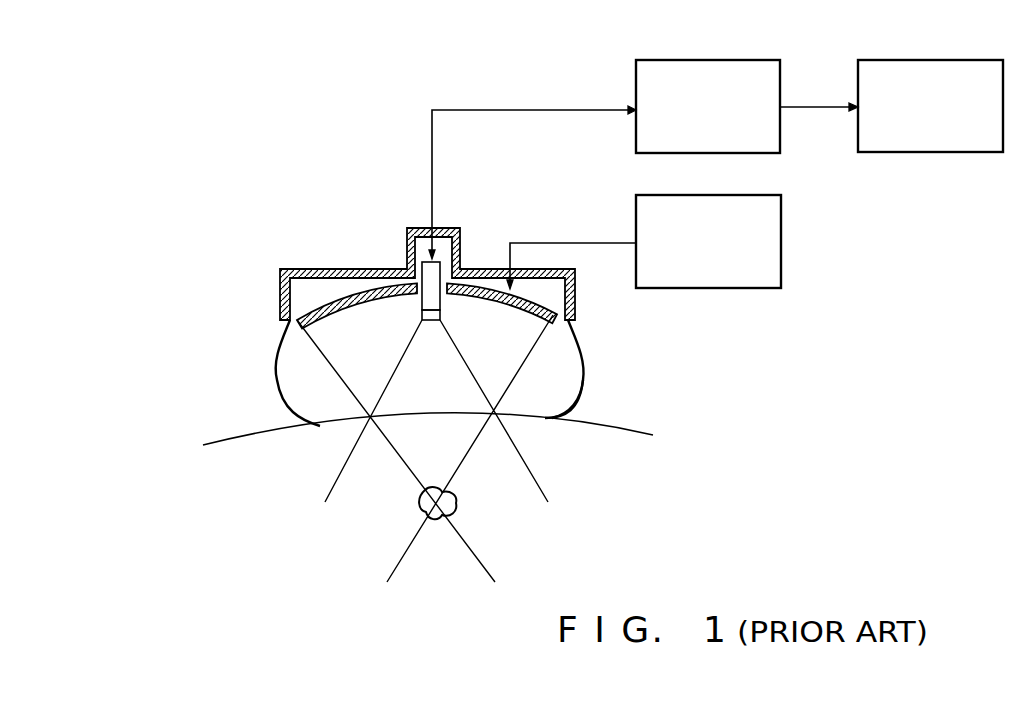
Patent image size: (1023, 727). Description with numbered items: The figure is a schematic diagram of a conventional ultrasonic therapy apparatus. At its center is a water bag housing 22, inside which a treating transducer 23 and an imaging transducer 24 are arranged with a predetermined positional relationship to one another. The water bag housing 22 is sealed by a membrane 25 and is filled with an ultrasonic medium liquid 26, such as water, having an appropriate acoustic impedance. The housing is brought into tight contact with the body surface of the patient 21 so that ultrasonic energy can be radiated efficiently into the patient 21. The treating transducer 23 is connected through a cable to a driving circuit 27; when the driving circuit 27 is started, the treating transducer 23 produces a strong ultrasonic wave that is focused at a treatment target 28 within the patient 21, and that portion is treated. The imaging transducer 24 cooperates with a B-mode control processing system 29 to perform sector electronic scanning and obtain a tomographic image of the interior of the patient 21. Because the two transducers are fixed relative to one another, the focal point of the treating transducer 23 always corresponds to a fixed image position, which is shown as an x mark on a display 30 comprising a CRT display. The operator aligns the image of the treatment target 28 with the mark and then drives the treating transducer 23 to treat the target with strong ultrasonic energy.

The patient 21 is at (234, 444).
The water bag housing 22 is at (584, 357).
The treating transducer 23 is at (480, 282).
The imaging transducer 24 is at (442, 314).
The membrane 25 is at (582, 395).
The ultrasonic medium liquid 26 is at (281, 360).
The driving circuit 27 is at (781, 262).
The treatment target 28 is at (458, 505).
The B-mode control processing system 29 is at (757, 60).
The display 30 is at (987, 60).